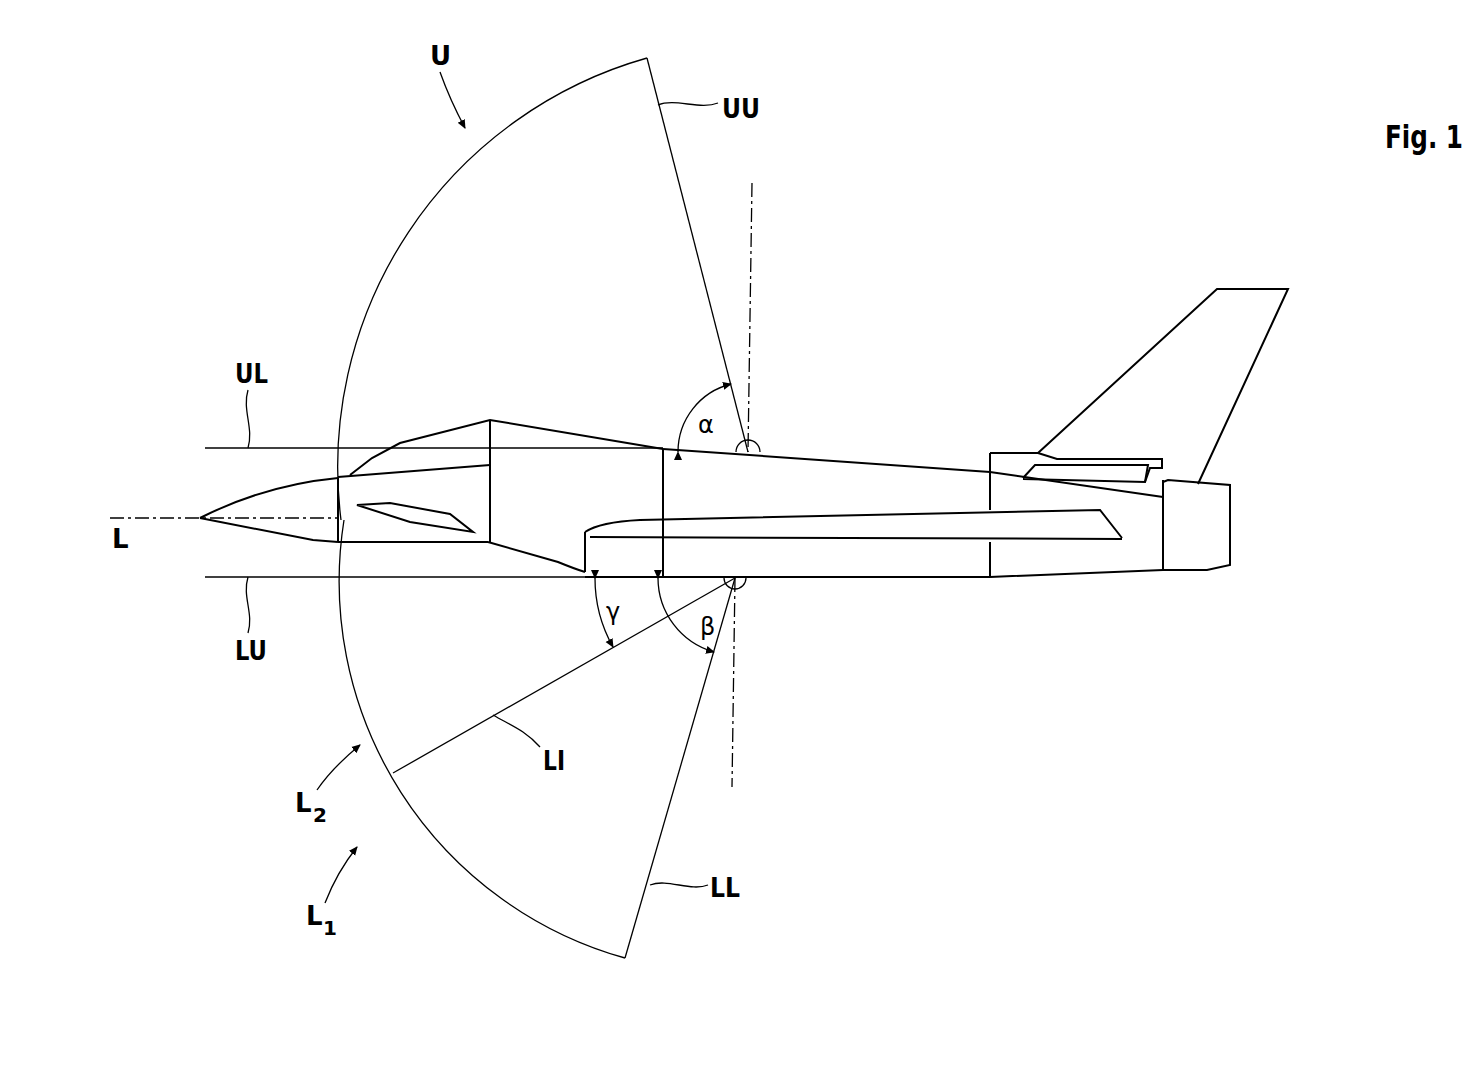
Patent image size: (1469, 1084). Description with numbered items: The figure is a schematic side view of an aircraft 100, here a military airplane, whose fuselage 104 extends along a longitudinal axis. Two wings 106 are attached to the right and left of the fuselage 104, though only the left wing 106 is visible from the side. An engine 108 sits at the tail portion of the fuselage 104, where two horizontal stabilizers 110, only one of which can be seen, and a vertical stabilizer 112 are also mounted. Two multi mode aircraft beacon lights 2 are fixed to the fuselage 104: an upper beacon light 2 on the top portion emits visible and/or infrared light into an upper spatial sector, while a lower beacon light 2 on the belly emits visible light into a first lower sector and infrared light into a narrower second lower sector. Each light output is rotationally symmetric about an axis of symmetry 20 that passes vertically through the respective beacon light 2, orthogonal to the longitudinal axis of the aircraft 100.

The aircraft 100 is at (1118, 185).
The fuselage 104 is at (897, 487).
The wing 106 is at (968, 530).
The engine 108 is at (1188, 555).
The horizontal stabilizer 110 is at (1010, 462).
The vertical stabilizer 112 is at (1240, 347).
The multi mode aircraft beacon light 2 is at (772, 437).
The axis of symmetry 20 is at (752, 195).